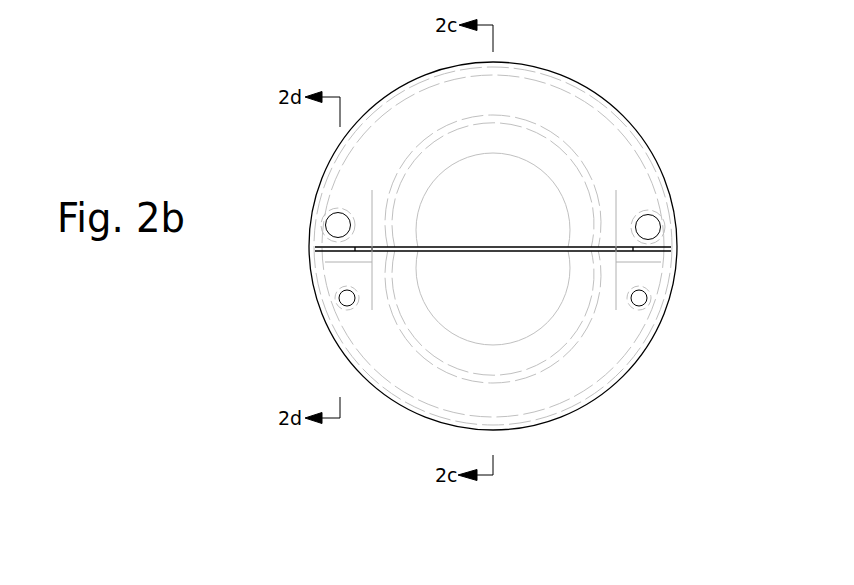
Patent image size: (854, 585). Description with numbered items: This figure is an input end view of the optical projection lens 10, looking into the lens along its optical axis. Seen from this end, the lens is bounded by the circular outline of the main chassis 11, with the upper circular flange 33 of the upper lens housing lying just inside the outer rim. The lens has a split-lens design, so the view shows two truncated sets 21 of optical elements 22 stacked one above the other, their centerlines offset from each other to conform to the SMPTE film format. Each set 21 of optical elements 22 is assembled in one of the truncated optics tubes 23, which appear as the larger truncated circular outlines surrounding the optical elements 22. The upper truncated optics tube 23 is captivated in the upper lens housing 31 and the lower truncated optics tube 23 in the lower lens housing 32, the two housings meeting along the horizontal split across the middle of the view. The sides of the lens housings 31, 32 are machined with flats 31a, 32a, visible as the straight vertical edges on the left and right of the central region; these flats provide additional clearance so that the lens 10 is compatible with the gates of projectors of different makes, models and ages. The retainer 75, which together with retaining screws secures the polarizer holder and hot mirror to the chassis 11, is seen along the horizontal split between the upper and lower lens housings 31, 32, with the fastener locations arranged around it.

The optical projection lens 10 is at (222, 303).
The main chassis 11 is at (402, 87).
The truncated set of optical elements 21 is at (432, 313).
The optical elements 22 is at (535, 209).
The truncated optics tube 23 is at (397, 182).
The upper lens housing 31 is at (362, 205).
The flat 31a is at (620, 215).
The lower lens housing 32 is at (372, 318).
The flat 32a is at (326, 262).
The upper circular flange 33 is at (573, 112).
The retainer 75 is at (370, 272).